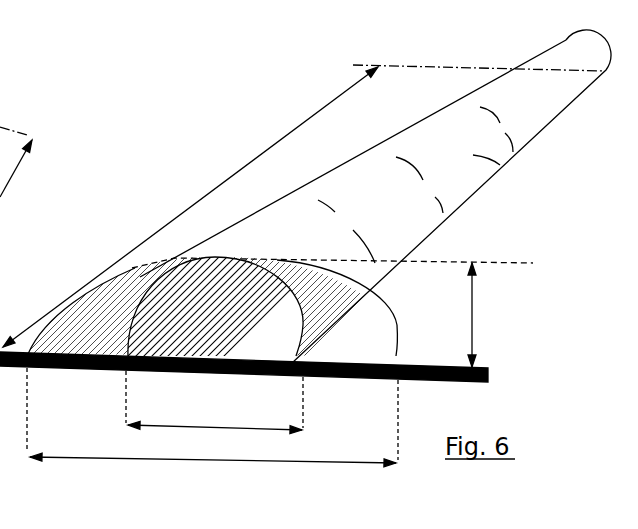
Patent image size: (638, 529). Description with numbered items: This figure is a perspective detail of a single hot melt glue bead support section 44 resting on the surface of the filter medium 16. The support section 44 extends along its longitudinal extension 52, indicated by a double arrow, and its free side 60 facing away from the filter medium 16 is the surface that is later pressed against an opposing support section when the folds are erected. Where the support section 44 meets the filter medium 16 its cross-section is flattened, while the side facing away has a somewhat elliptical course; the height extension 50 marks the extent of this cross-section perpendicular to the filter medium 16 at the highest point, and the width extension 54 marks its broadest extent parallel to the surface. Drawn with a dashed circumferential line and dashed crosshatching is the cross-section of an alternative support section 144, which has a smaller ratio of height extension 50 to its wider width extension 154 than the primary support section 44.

The filter medium 16 is at (490, 377).
The support section 44 is at (476, 158).
The height extension 50 is at (474, 308).
The longitudinal extension 52 is at (297, 127).
The width extension 54 is at (273, 433).
The free side 60 is at (383, 143).
The alternative support section 144 is at (399, 340).
The width extension 154 is at (90, 457).